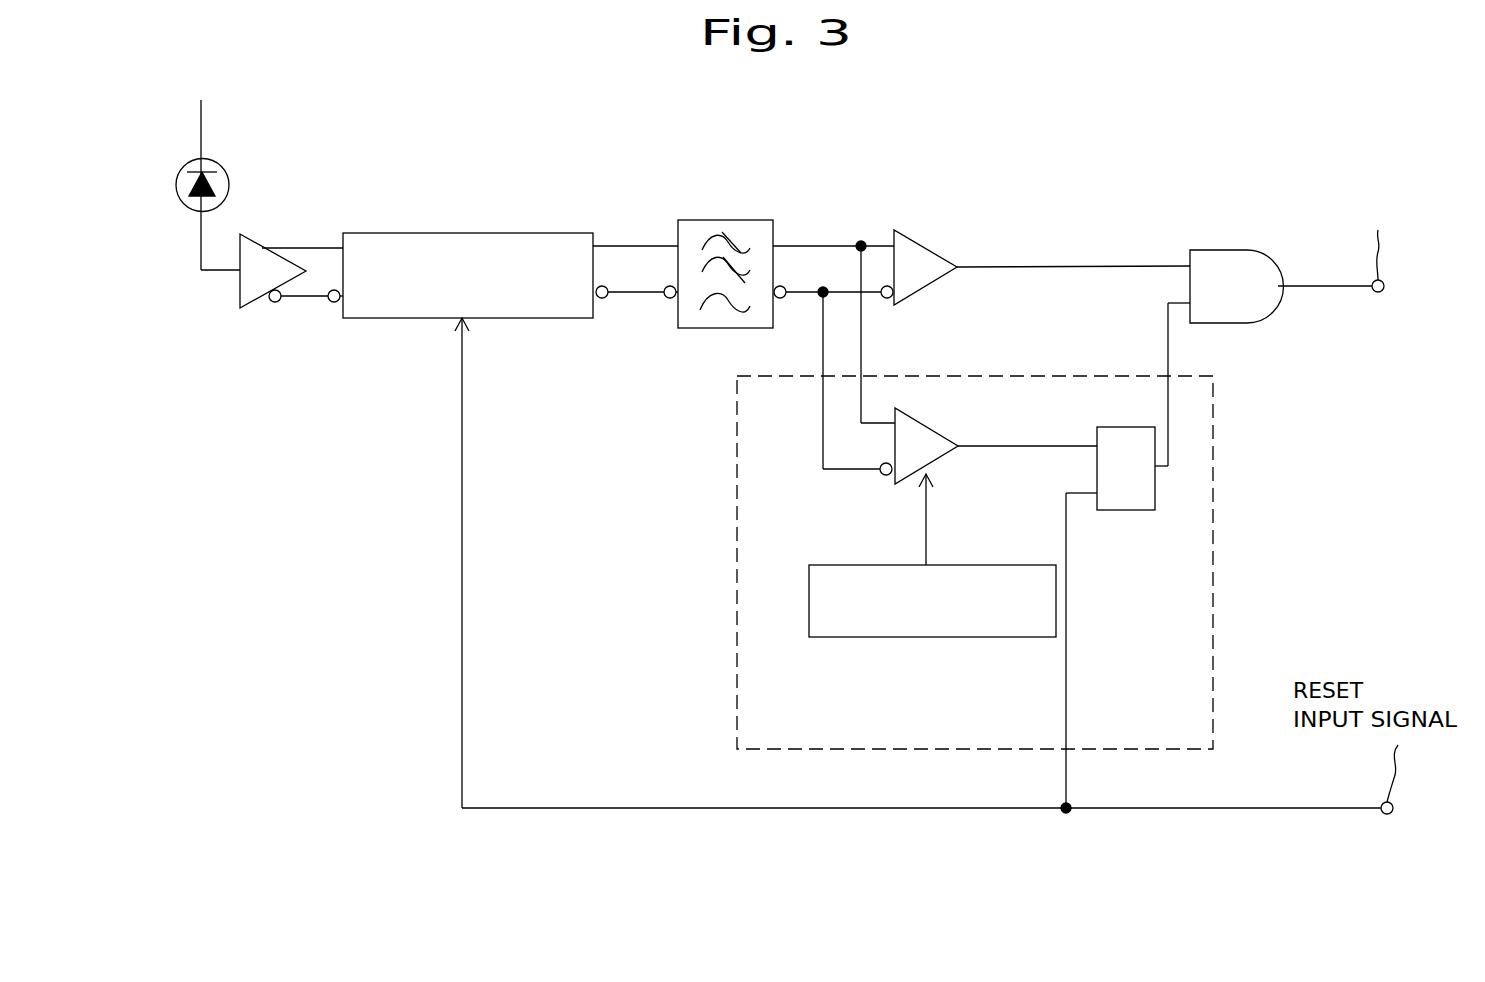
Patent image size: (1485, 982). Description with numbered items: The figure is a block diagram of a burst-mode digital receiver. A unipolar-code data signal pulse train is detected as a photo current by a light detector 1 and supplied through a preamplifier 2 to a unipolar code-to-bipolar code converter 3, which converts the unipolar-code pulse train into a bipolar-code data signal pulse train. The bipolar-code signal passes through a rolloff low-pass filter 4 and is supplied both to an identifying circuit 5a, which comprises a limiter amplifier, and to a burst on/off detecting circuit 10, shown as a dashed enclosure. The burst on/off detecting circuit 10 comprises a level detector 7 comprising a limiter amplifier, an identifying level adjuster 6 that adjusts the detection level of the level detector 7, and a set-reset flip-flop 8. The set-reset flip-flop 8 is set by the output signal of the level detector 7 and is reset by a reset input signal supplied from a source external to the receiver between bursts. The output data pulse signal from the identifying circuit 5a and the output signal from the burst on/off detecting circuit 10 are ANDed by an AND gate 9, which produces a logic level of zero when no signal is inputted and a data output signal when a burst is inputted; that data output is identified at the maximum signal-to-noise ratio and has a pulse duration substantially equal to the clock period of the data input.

The light detector 1 is at (221, 168).
The preamplifier 2 is at (262, 244).
The unipolar code-to-bipolar code converter 3 is at (455, 233).
The rolloff low-pass filter 4 is at (718, 220).
The identifying circuit 5a is at (921, 245).
The identifying level adjuster 6 is at (955, 565).
The level detector 7 is at (931, 430).
The set-reset flip-flop 8 is at (1130, 510).
The AND gate 9 is at (1226, 250).
The burst on/off detecting circuit 10 is at (1213, 530).